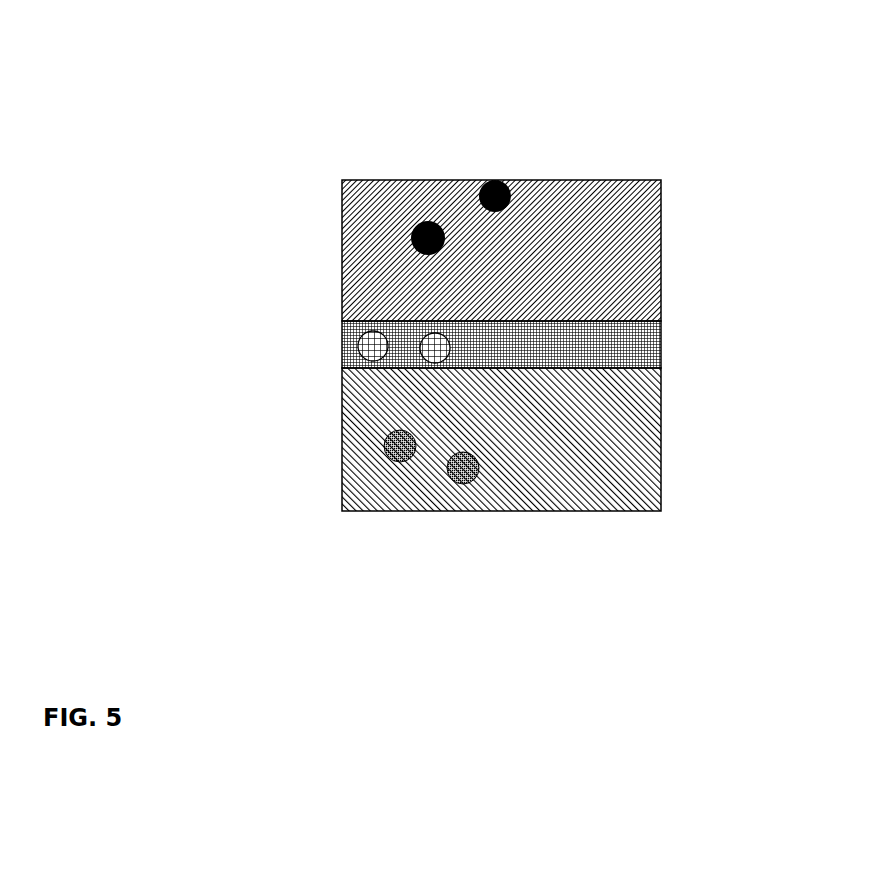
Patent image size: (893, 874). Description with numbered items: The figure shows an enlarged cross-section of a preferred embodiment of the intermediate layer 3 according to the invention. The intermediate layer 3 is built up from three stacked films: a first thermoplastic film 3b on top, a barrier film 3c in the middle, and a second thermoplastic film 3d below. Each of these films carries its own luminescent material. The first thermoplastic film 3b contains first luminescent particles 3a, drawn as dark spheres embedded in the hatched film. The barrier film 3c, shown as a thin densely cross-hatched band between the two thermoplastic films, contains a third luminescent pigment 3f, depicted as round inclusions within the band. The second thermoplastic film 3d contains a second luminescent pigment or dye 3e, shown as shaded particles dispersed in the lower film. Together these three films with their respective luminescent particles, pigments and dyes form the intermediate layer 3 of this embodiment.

The intermediate layer 3 is at (489, 271).
The first luminescent particles 3a is at (431, 212).
The first thermoplastic film 3b is at (316, 274).
The barrier film 3c is at (661, 335).
The second thermoplastic film 3d is at (664, 448).
The second luminescent pigment or dye 3e is at (420, 462).
The third luminescent pigment 3f is at (335, 340).